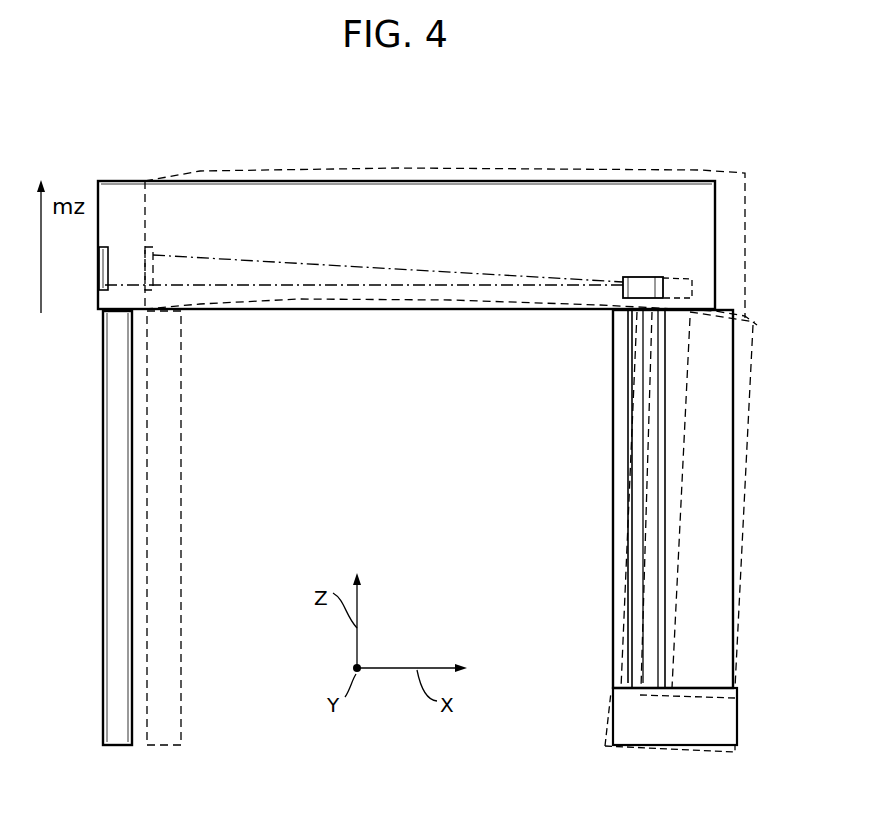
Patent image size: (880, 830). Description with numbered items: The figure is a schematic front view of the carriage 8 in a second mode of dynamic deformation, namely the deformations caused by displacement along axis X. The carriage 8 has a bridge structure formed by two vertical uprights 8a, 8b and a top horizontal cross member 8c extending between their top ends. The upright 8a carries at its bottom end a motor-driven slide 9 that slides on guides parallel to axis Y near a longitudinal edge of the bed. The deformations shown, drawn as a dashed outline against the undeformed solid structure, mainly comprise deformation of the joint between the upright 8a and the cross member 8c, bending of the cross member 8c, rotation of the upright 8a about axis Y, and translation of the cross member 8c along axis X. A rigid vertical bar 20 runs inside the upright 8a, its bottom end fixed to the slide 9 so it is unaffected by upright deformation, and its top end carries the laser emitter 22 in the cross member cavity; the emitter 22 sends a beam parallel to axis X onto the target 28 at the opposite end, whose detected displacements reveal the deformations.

The carriage 8 is at (672, 181).
The vertical upright 8a is at (688, 543).
The vertical upright 8b is at (113, 633).
The top horizontal cross member 8c is at (517, 210).
The motor-driven slide 9 is at (723, 722).
The vertical bar 20 is at (653, 418).
The laser emitter 22 is at (636, 282).
The target 28 is at (104, 247).